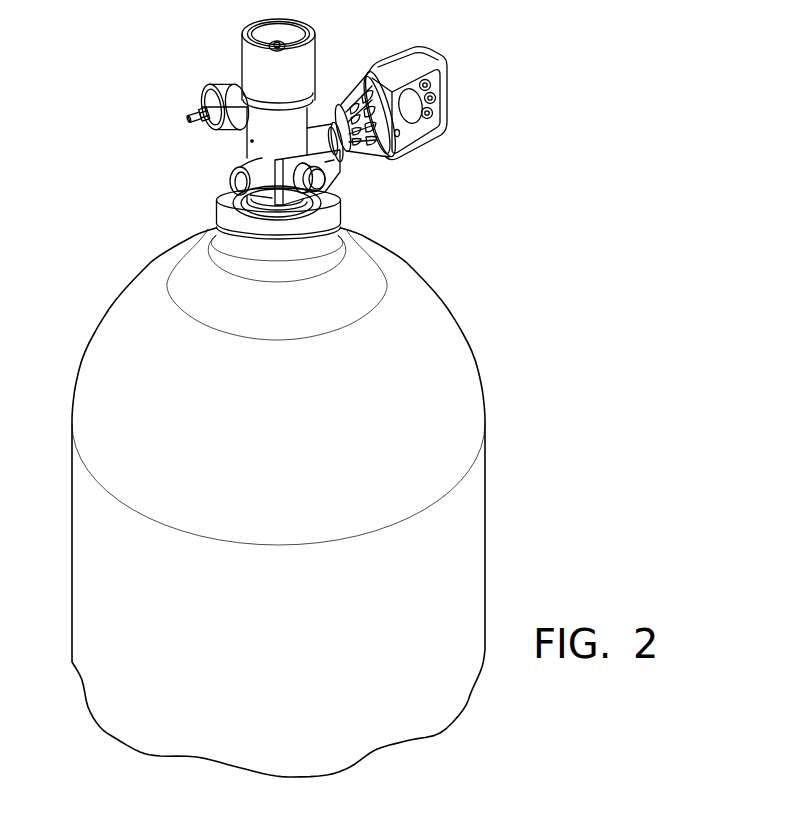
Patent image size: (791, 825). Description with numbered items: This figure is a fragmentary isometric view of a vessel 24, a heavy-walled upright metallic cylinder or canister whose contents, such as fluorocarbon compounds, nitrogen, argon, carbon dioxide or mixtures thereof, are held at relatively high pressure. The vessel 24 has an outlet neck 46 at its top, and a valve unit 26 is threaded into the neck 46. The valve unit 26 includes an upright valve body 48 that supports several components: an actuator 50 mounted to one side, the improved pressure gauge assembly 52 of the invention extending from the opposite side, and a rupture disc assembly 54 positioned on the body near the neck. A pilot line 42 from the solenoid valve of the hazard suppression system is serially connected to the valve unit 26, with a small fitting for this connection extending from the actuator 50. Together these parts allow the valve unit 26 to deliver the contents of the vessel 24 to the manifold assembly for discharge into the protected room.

The vessel 24 is at (463, 568).
The valve unit 26 is at (188, 143).
The pilot line 42 is at (203, 113).
The outlet neck 46 is at (223, 227).
The valve body 48 is at (317, 57).
The actuator 50 is at (204, 66).
The pressure gauge assembly 52 is at (486, 74).
The rupture disc assembly 54 is at (345, 190).